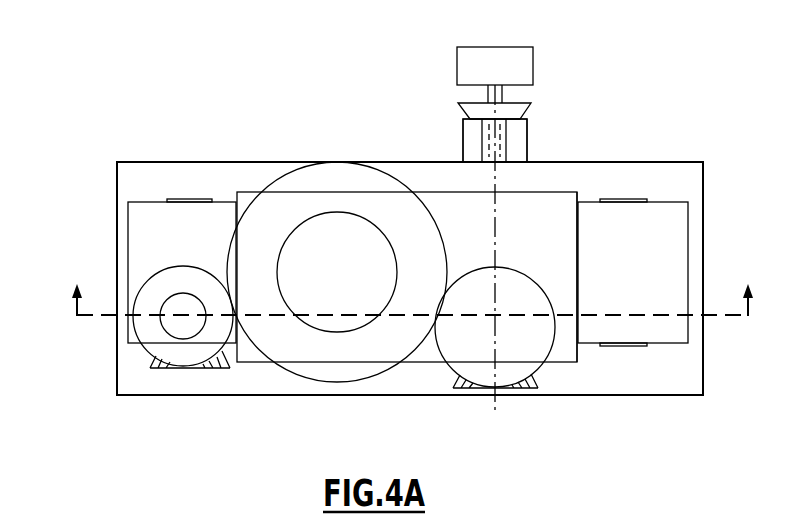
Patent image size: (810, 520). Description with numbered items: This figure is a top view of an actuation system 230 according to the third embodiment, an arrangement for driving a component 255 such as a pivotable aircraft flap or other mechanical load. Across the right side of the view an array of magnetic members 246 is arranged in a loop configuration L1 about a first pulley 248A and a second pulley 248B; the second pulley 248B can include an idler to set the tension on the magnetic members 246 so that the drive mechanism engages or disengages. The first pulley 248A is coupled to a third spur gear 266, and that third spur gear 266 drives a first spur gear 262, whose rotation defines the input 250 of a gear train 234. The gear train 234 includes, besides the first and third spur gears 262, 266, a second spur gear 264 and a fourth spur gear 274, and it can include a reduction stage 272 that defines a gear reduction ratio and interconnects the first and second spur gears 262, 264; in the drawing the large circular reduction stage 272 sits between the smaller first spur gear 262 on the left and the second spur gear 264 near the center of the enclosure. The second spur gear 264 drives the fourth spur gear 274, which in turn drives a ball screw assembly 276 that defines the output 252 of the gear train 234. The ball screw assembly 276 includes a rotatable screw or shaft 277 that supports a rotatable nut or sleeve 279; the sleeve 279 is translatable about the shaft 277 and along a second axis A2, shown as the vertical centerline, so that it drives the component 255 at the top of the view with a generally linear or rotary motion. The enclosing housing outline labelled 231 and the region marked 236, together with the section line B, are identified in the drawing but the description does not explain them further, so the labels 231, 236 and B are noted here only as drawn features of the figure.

The actuation system 230 is at (98, 63).
The housing 231 is at (182, 93).
The gear train 234 is at (247, 182).
The second housing portion 236 is at (566, 191).
The magnetic members 246 is at (688, 215).
The first pulley 248A is at (178, 199).
The second pulley 248B is at (612, 199).
The input 250 is at (135, 372).
The output 252 is at (537, 123).
The component 255 is at (517, 79).
The first spur gear 262 is at (152, 345).
The second spur gear 264 is at (553, 376).
The third spur gear 266 is at (158, 370).
The reduction stage 272 is at (288, 168).
The fourth spur gear 274 is at (463, 386).
The ball screw assembly 276 is at (577, 125).
The shaft 277 is at (460, 108).
The sleeve 279 is at (528, 143).
The second axis A2 is at (503, 100).
The loop configuration L1 is at (688, 243).
The section line B- B is at (414, 307).